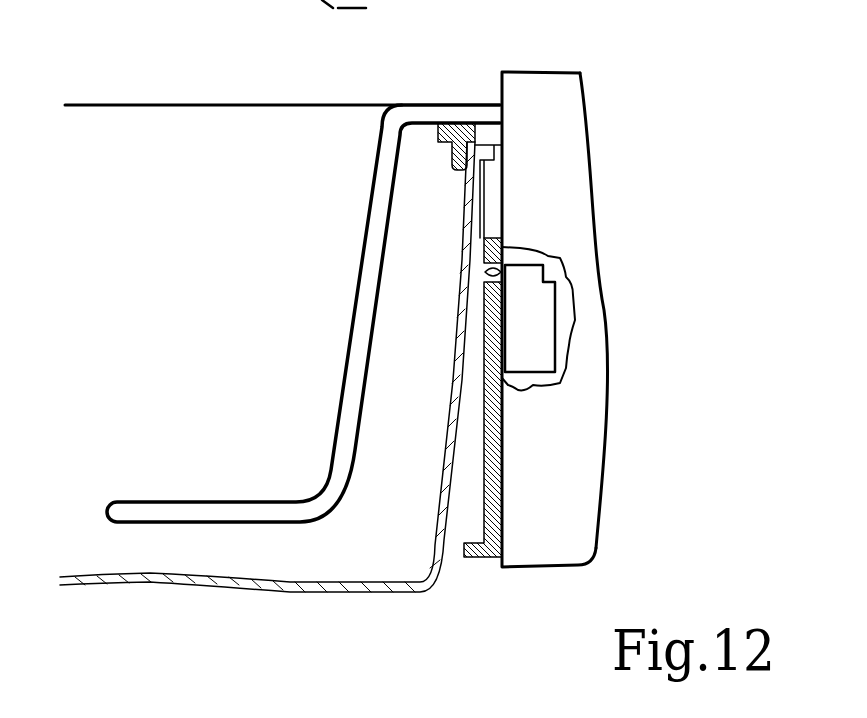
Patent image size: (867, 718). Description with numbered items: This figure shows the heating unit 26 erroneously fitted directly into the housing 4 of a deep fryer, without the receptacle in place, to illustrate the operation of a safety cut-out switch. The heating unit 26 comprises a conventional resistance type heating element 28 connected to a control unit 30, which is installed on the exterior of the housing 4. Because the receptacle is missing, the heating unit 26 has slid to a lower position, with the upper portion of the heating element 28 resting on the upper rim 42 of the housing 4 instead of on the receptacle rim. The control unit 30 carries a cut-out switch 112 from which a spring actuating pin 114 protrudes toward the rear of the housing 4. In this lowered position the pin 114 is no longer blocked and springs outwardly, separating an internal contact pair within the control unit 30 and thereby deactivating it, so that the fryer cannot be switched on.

The housing 4 is at (423, 588).
The heating unit 26 is at (573, 97).
The heating element 28 is at (260, 512).
The control unit 30 is at (593, 157).
The upper rim of the housing 42 is at (455, 130).
The cut-out switch 112 is at (540, 311).
The spring actuating pin 114 is at (503, 262).